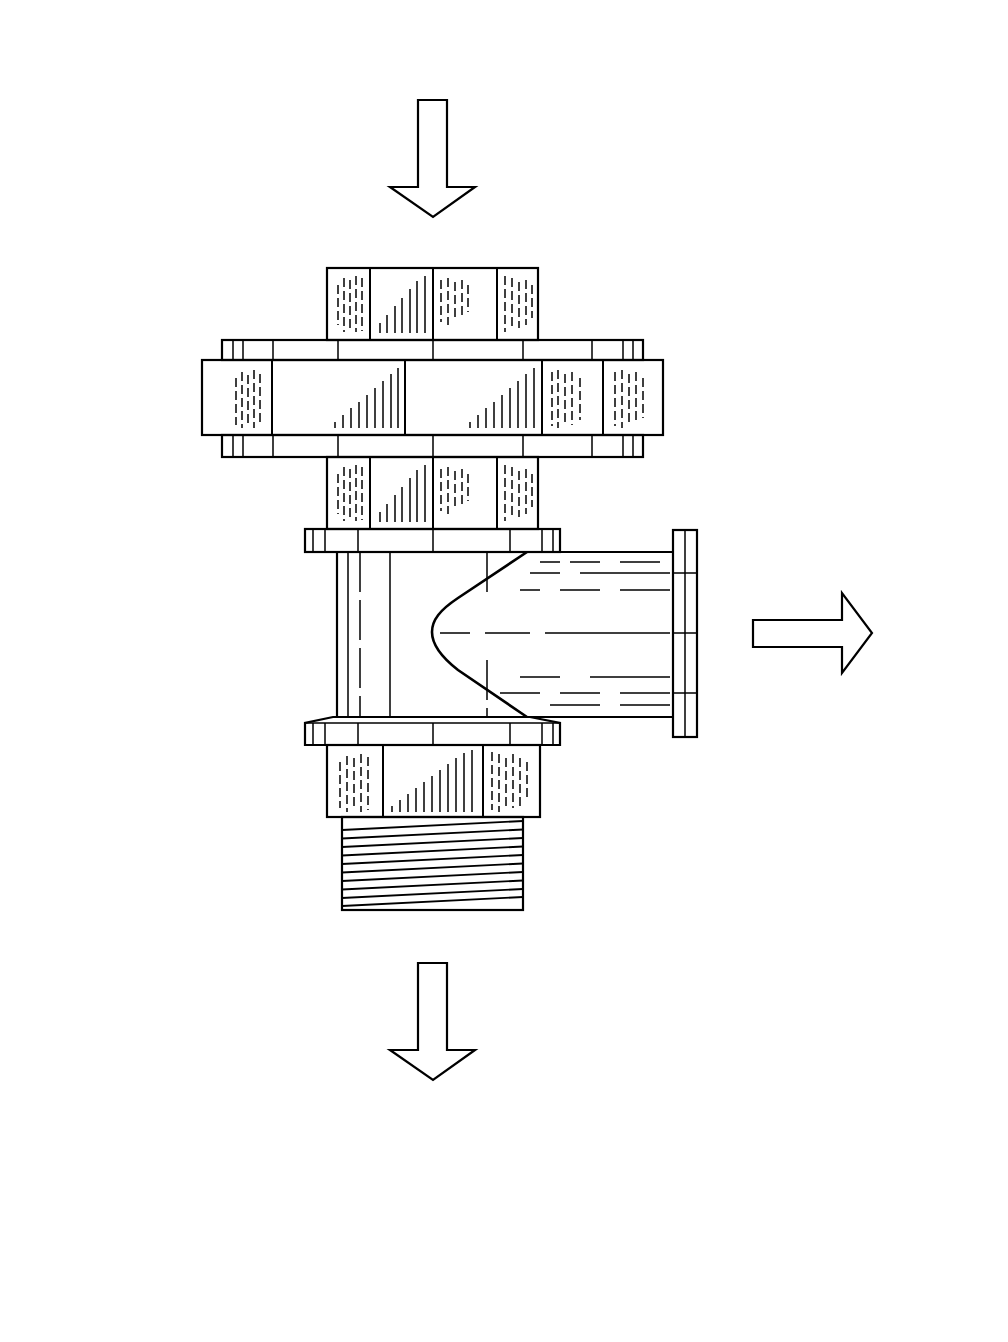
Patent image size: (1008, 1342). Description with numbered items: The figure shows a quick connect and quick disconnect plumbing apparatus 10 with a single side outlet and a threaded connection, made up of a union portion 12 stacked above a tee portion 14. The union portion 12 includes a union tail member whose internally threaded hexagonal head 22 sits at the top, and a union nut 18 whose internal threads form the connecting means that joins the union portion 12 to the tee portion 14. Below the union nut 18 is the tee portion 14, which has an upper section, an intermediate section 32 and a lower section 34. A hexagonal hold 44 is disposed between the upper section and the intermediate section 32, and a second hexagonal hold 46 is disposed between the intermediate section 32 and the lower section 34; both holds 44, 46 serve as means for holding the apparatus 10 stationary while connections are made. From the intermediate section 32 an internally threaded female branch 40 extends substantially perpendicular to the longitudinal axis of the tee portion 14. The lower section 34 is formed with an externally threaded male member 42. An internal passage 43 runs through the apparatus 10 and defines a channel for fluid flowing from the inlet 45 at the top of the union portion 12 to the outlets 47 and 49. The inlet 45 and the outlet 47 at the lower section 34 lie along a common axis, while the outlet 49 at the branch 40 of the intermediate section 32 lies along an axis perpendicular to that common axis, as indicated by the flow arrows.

The quick connect and quick disconnect plumbing apparatus 10 is at (188, 90).
The union portion 12 is at (700, 346).
The tee portion 14 is at (750, 525).
The union nut 18 is at (663, 401).
The internally threaded hexagonal head 22 is at (538, 300).
The intermediate section 32 is at (281, 638).
The lower section 34 is at (281, 861).
The internally threaded female branch 40 is at (697, 688).
The externally threaded male member 42 is at (523, 873).
The internal passage 43 is at (346, 241).
The hexagonal hold 44 is at (327, 491).
The inlet 45 is at (447, 140).
The hexagonal hold 46 is at (540, 797).
The outlet 47 is at (447, 1016).
The outlet 49 is at (786, 618).